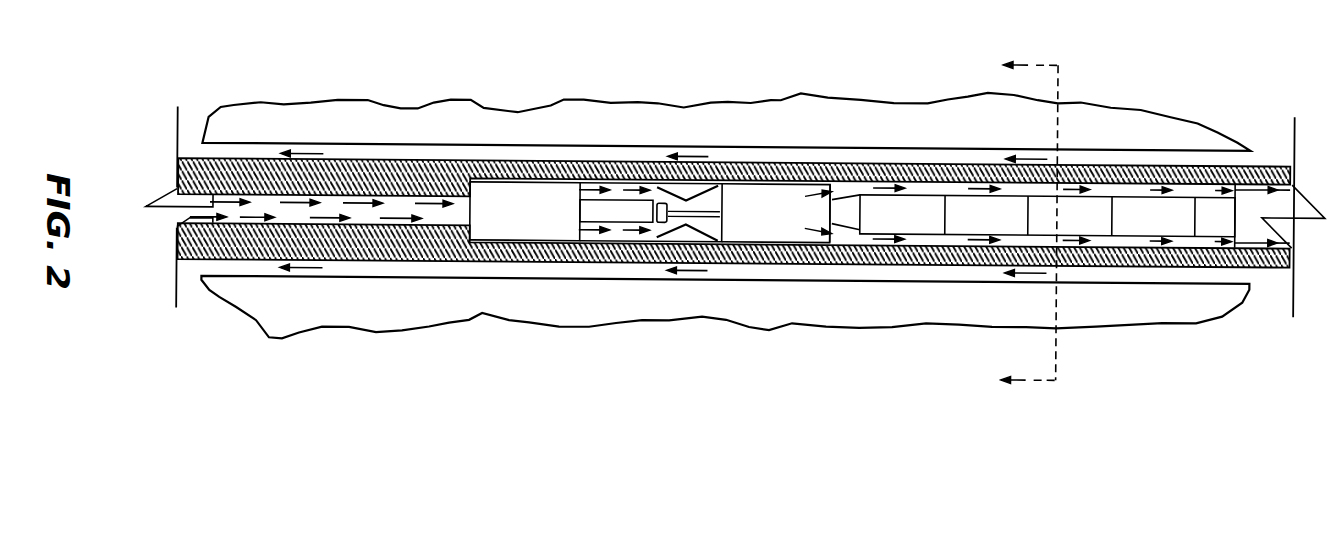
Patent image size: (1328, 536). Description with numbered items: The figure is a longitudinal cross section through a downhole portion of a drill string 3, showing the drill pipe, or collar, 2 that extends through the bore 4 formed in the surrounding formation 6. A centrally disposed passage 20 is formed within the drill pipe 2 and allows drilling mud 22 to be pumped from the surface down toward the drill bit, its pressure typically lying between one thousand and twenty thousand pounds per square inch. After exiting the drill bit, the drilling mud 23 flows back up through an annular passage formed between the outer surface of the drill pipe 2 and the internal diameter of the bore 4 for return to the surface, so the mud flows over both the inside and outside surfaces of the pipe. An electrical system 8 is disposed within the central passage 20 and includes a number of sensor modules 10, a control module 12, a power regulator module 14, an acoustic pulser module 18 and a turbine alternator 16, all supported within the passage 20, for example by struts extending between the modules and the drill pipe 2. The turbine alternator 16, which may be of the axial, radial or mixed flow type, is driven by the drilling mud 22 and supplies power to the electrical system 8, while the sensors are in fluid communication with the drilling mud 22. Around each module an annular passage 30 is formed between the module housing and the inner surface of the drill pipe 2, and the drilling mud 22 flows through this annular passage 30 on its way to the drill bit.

The drill pipe 2 is at (1250, 159).
The drill string 3 is at (1019, 223).
The bore 4 is at (1173, 120).
The formation 6 is at (790, 121).
The electrical system 8 is at (860, 242).
The sensor modules 10 is at (1127, 233).
The control module 12 is at (1017, 236).
The power regulator module 14 is at (930, 235).
The turbine alternator 16 is at (767, 259).
The acoustic pulser module 18 is at (547, 260).
The central passage 20 is at (1260, 255).
The drilling mud 22 is at (567, 66).
The drilling mud 23 is at (312, 149).
The annular passage 30 is at (1093, 177).